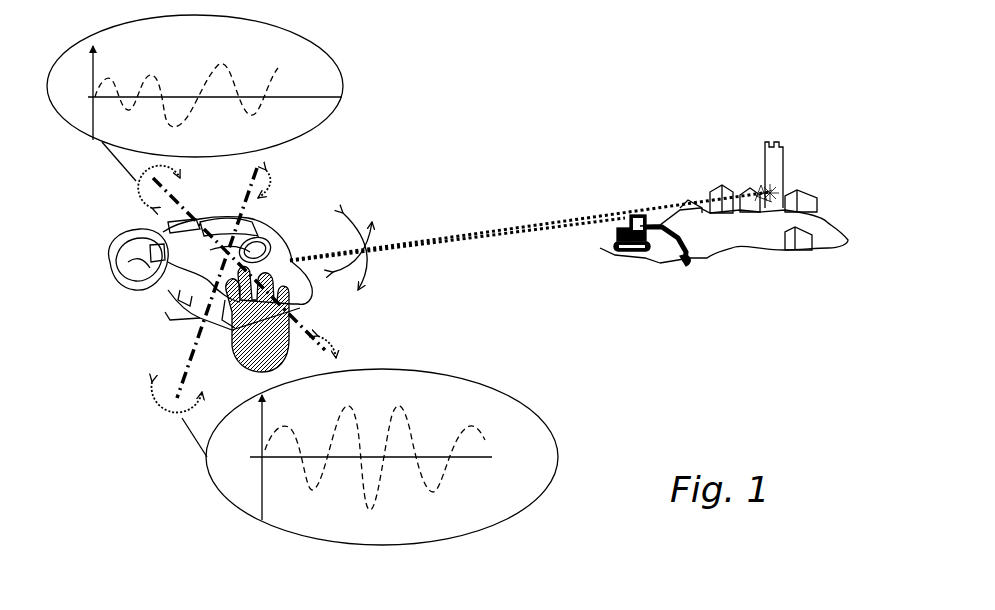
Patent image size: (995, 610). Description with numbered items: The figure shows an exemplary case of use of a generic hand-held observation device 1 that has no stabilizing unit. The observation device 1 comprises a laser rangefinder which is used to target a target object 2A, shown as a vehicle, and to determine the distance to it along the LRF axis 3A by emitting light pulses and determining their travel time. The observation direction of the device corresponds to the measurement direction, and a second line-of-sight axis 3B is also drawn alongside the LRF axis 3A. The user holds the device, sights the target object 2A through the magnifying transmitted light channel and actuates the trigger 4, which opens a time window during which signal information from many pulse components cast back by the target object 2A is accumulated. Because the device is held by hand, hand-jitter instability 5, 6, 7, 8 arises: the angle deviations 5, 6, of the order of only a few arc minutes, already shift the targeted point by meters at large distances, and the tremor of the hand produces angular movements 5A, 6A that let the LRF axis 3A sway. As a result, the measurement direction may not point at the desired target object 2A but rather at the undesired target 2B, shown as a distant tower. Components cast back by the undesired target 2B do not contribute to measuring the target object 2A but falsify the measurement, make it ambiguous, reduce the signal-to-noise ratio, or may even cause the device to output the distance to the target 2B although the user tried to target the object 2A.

The hand-held observation device 1 is at (100, 233).
The target object 2A is at (623, 217).
The undesired target 2B is at (772, 192).
The LRF axis 3A is at (490, 240).
The line-of-sight axis 3B is at (542, 223).
The trigger 4 is at (250, 278).
The hand-jitter instability (angle deviation) 5 is at (224, 64).
The angular movement 5A is at (376, 254).
The hand-jitter instability (angle deviation) 6 is at (365, 478).
The angular movement 6A is at (375, 239).
The hand-jitter instability 7 is at (264, 183).
The hand-jitter instability 8 is at (331, 352).